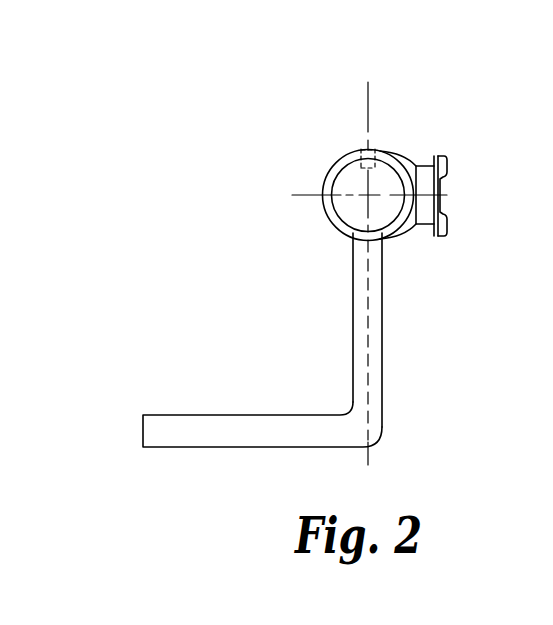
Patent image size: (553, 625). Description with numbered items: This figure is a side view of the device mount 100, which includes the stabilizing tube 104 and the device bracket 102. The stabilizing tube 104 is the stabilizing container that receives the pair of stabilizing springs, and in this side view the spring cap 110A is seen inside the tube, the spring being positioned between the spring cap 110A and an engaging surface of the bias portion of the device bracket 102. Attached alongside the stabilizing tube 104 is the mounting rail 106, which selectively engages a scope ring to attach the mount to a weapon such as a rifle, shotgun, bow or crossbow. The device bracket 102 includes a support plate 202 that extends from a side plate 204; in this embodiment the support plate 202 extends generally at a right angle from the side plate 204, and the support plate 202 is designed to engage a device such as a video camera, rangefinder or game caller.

The device mount 100 is at (287, 96).
The device bracket 102 is at (320, 340).
The stabilizing tube 104 is at (322, 172).
The mounting rail 106 is at (443, 167).
The spring cap 110A is at (346, 207).
The support plate 202 is at (204, 415).
The side plate 204 is at (382, 298).